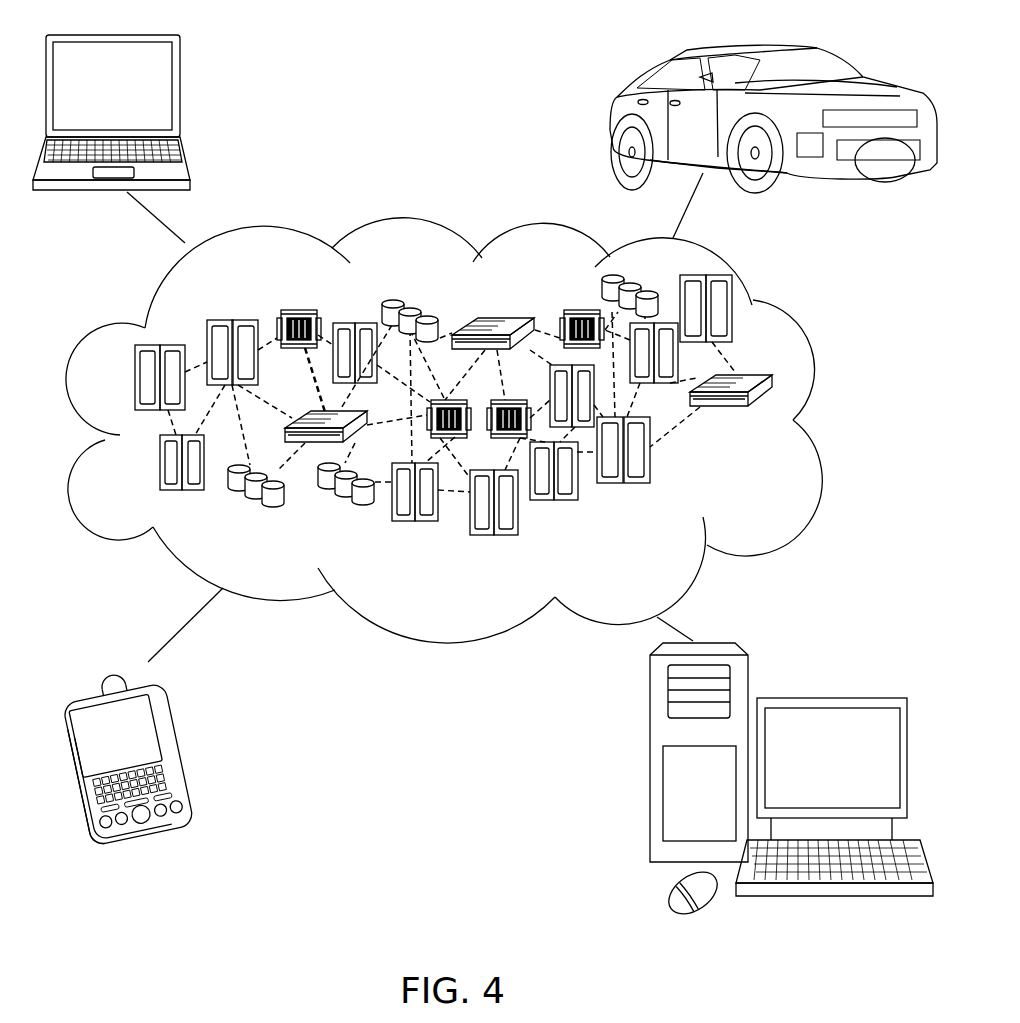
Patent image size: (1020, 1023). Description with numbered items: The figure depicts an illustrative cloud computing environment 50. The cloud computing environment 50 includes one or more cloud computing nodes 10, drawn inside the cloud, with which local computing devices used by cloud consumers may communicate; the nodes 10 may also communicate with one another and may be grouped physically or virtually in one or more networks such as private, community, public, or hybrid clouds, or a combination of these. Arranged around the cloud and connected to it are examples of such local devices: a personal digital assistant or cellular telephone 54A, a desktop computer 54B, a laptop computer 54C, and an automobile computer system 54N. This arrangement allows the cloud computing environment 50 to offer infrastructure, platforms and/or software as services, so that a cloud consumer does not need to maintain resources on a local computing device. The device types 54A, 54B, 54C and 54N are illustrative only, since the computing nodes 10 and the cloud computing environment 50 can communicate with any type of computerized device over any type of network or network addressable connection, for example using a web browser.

The cloud computing nodes 10 is at (772, 481).
The cloud computing environment 50 is at (808, 348).
The personal digital assistant (PDA) or cellular telephone 54A is at (184, 754).
The desktop computer 54B is at (826, 698).
The laptop computer 54C is at (181, 92).
The automobile computer system 54N is at (610, 110).